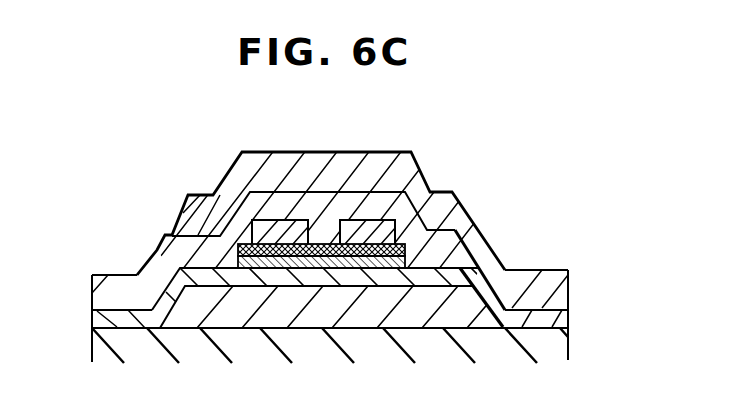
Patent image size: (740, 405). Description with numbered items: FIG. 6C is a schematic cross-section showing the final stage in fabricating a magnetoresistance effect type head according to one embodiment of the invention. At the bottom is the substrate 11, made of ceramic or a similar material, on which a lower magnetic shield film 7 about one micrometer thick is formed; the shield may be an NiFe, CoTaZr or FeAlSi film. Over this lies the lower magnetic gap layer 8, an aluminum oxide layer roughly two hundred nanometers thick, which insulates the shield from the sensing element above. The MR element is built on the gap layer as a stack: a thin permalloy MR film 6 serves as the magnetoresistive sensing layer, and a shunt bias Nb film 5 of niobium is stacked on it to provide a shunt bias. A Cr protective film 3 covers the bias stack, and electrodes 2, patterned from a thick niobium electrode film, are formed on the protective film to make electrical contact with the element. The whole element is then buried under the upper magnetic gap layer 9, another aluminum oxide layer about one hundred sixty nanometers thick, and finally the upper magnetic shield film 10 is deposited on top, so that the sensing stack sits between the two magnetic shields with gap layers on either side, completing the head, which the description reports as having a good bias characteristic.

The electrodes 2 is at (352, 220).
The Cr protective film 3 is at (430, 232).
The shunt bias Nb film 5 is at (408, 249).
The permalloy MR film 6 is at (408, 260).
The lower magnetic shield film 7 is at (475, 266).
The lower magnetic gap layer 8 is at (553, 316).
The upper magnetic gap layer 9 is at (553, 285).
The upper magnetic shield film 10 is at (410, 152).
The substrate 11 is at (550, 347).